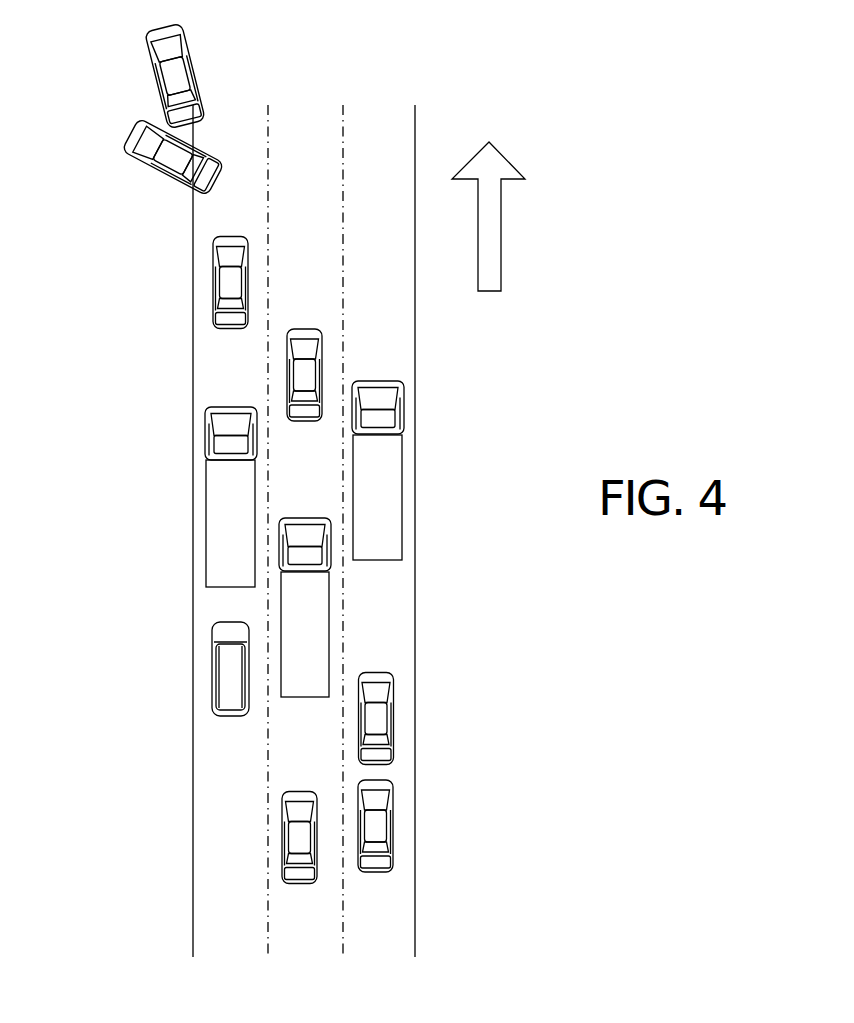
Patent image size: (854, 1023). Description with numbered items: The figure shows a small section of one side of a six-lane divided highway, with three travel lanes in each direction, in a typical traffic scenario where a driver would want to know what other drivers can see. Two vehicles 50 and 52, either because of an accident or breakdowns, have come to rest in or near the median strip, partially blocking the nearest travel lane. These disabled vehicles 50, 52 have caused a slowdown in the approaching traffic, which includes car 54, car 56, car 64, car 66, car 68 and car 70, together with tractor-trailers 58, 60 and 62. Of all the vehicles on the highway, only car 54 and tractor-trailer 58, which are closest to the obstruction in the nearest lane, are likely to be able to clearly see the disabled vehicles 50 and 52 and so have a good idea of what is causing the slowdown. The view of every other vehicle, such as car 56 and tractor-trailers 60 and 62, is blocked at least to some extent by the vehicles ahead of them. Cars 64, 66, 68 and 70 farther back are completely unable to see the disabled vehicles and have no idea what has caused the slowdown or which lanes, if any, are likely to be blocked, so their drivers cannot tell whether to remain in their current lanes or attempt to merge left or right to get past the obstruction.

The disabled vehicle 50 is at (157, 63).
The disabled vehicle 52 is at (138, 132).
The car 54 is at (213, 280).
The car 56 is at (287, 370).
The tractor-trailer 58 is at (205, 512).
The tractor-trailer 60 is at (400, 425).
The tractor-trailer 62 is at (322, 623).
The car 64 is at (205, 671).
The car 66 is at (393, 697).
The car 68 is at (287, 832).
The car 70 is at (388, 807).